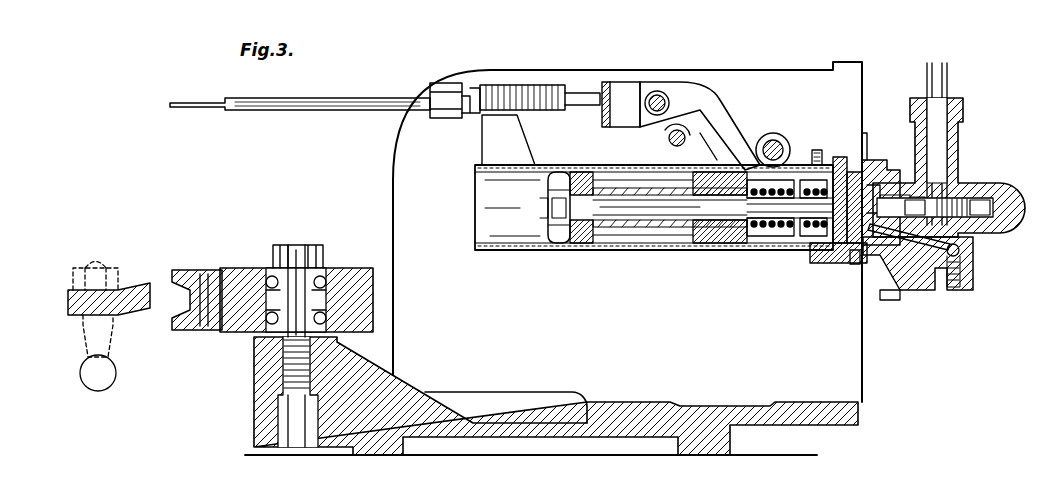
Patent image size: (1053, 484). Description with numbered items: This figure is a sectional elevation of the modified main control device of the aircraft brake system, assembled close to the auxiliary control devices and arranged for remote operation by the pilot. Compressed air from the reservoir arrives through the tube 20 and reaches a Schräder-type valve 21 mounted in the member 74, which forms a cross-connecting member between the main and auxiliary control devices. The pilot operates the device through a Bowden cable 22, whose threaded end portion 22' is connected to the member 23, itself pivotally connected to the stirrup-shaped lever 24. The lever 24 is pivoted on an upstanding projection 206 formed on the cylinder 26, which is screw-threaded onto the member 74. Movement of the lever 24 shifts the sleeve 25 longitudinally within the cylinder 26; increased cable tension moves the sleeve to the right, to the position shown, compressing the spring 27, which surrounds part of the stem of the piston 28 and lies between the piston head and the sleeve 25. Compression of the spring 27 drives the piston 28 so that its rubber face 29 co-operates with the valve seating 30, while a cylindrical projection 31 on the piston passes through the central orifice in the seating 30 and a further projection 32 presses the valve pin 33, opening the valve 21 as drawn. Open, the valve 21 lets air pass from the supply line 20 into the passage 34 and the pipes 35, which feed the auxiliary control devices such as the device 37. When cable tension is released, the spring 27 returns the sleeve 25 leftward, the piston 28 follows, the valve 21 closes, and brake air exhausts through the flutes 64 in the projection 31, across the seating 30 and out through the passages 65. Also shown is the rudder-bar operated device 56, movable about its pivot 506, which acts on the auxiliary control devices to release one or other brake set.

The tube 20 is at (928, 77).
The valve 21 is at (955, 167).
The cable 22 is at (300, 124).
The threaded rod end 22' is at (540, 115).
The member 23 is at (627, 113).
The stirrup-shaped lever 24 is at (655, 124).
The sleeve 25 is at (707, 227).
The cylinder 26 is at (640, 252).
The spring 27 is at (760, 227).
The piston 28 is at (800, 228).
The rubber face 29 is at (838, 256).
The valve seating 30 is at (840, 165).
The cylindrical projection 31 is at (850, 270).
The projection 32 is at (867, 147).
The valve pin 33 is at (885, 182).
The passage 34 is at (917, 270).
The pipes 35 is at (963, 252).
The auxiliary control device 37 is at (402, 153).
The device 56 is at (172, 330).
The flutes 64 is at (880, 257).
The passages 65 is at (855, 160).
The member 74 is at (900, 263).
The upstanding projection 206 is at (700, 133).
The pivot 506 is at (281, 256).